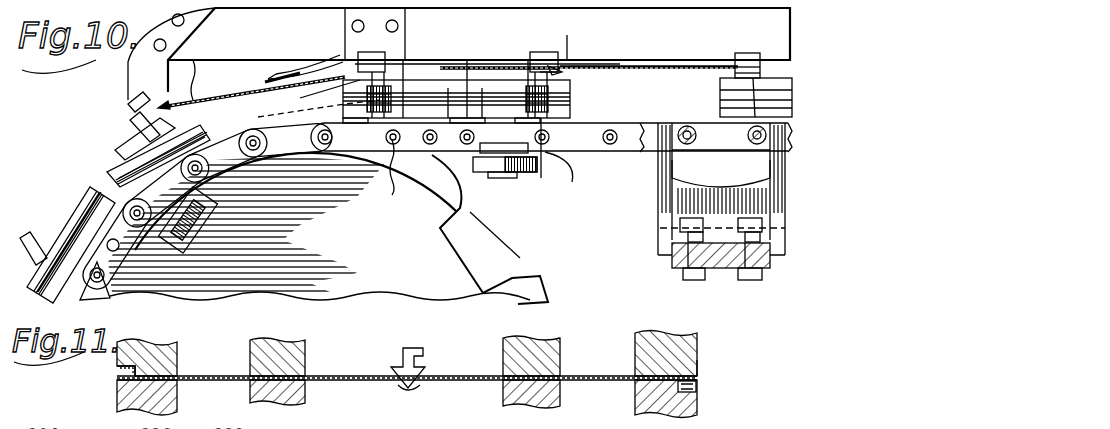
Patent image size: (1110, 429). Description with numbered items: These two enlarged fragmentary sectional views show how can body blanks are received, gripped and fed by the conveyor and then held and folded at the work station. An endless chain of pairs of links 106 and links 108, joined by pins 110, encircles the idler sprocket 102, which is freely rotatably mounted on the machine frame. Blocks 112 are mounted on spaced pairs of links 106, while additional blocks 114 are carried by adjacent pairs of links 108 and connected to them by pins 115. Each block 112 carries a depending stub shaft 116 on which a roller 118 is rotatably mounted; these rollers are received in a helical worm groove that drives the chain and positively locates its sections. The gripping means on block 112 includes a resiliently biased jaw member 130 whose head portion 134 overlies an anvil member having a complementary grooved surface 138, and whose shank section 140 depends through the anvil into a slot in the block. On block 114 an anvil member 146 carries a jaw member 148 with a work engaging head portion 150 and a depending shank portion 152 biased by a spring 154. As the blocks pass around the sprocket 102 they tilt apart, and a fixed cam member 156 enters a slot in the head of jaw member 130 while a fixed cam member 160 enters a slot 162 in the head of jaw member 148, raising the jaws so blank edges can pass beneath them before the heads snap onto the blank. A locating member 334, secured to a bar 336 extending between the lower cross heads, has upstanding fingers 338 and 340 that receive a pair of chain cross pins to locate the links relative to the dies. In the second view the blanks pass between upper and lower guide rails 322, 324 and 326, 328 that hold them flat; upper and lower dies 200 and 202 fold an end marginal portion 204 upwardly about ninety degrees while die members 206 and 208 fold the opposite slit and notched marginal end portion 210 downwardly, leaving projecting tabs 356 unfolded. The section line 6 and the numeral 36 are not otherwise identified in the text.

In FIG. 10, the section line 6- 6 is at (548, 40).
In FIG. 10, the chain 36 is at (181, 54).
In FIG. 11, the chain 36 is at (472, 386).
In FIG. 10, the idler sprocket 102 is at (437, 218).
In FIG. 10, the links 106 is at (571, 176).
In FIG. 10, the links 108 is at (440, 196).
In FIG. 10, the pins 110 is at (683, 110).
In FIG. 10, the block 112 is at (125, 162).
In FIG. 10, the block 114 is at (68, 228).
In FIG. 10, the pins 115 is at (118, 130).
In FIG. 10, the stub shaft 116 is at (498, 178).
In FIG. 10, the roller 118 is at (433, 207).
In FIG. 10, the jaw member 130 is at (132, 93).
In FIG. 10, the head portion 134 is at (553, 70).
In FIG. 10, the grooved surface 138 is at (541, 72).
In FIG. 10, the shank section 140 is at (530, 58).
In FIG. 10, the anvil member 146 is at (317, 93).
In FIG. 10, the jaw member 148 is at (391, 42).
In FIG. 10, the head portion 150 is at (373, 53).
In FIG. 10, the shank portion 152 is at (385, 77).
In FIG. 10, the spring 154 is at (297, 112).
In FIG. 10, the cam member 156 is at (107, 143).
In FIG. 10, the cam member 160 is at (282, 76).
In FIG. 11, the slot 162 is at (426, 353).
In FIG. 11, the upper die 200 is at (168, 344).
In FIG. 11, the lower die 202 is at (125, 405).
In FIG. 11, the end marginal portion 204 is at (117, 371).
In FIG. 11, the upper die member 206 is at (696, 345).
In FIG. 11, the lower die member 208 is at (697, 406).
In FIG. 11, the marginal end portion 210 is at (697, 386).
In FIG. 11, the upper guide rail 322 is at (289, 344).
In FIG. 11, the lower guide rail 324 is at (306, 397).
In FIG. 11, the upper guide rail 326 is at (551, 344).
In FIG. 11, the lower guide rail 328 is at (533, 396).
In FIG. 10, the locating member 334 is at (672, 210).
In FIG. 10, the bar 336 is at (680, 258).
In FIG. 10, the finger 338 is at (672, 167).
In FIG. 10, the finger 340 is at (776, 164).
In FIG. 11, the projecting tabs 356 is at (697, 368).